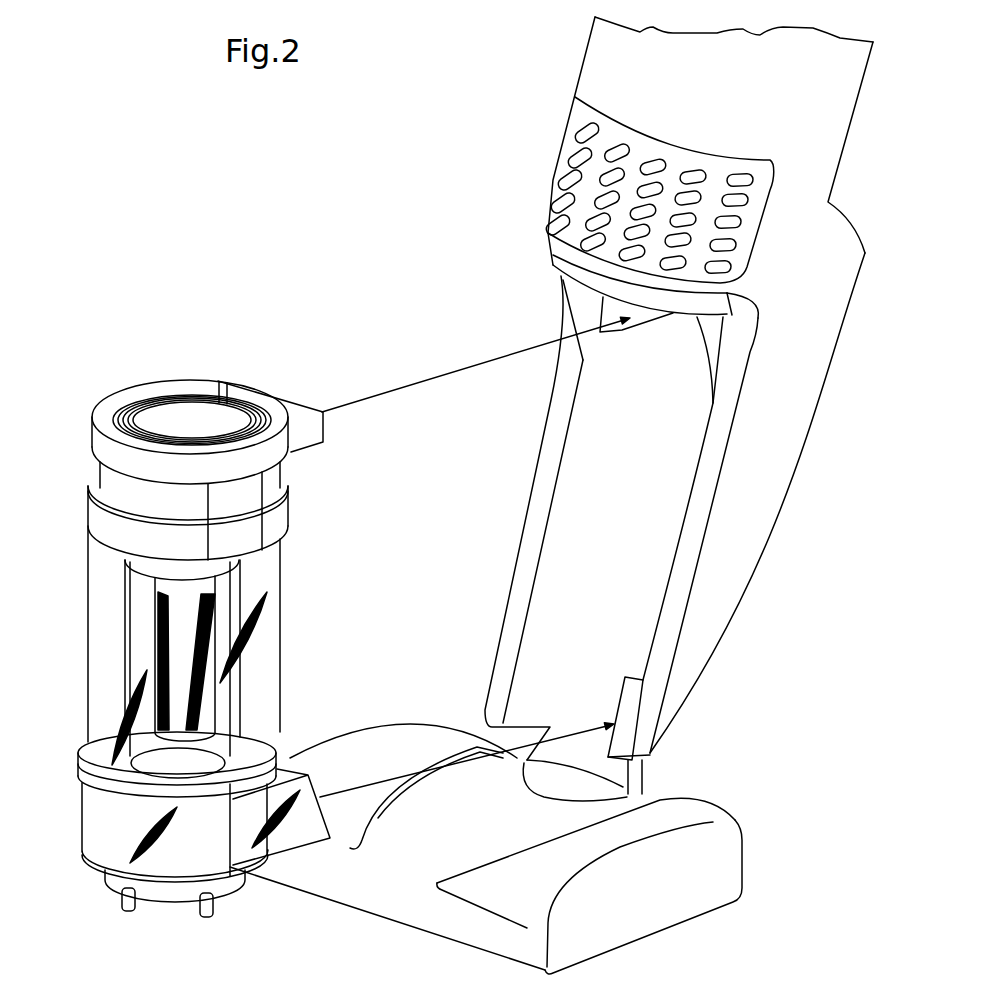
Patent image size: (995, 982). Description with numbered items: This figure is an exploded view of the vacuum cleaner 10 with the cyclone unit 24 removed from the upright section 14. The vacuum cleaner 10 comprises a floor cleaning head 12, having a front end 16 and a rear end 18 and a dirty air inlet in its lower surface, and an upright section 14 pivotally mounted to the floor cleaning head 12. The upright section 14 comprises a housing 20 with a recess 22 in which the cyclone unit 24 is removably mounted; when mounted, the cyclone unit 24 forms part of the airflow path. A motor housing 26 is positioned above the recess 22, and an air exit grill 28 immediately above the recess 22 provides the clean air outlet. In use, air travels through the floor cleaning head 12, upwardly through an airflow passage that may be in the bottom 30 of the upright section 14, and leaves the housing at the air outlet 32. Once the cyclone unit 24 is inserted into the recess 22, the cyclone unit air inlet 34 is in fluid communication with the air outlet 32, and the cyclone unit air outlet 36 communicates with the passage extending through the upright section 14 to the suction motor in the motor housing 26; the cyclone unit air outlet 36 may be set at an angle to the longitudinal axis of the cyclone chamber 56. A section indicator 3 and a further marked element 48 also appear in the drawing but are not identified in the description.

The section line for FIG. 3 (cartridge) 3 is at (105, 386).
The vacuum cleaner 10 is at (360, 155).
The floor cleaning head 12 is at (700, 903).
The upright section 14 is at (807, 394).
The front end 16 is at (432, 936).
The rear end 18 is at (748, 798).
The housing 20 is at (770, 487).
The recess 22 is at (596, 505).
The cyclone unit 24 is at (70, 577).
The motor housing 26 is at (807, 178).
The air exit grill 28 is at (558, 182).
The bottom of upright section 30 is at (655, 768).
The air outlet 32 is at (627, 693).
The cyclone unit air inlet 34 is at (292, 838).
The cyclone unit air outlet 36 is at (173, 415).
The flange 48 is at (82, 815).
The cyclone chamber 56 is at (133, 661).